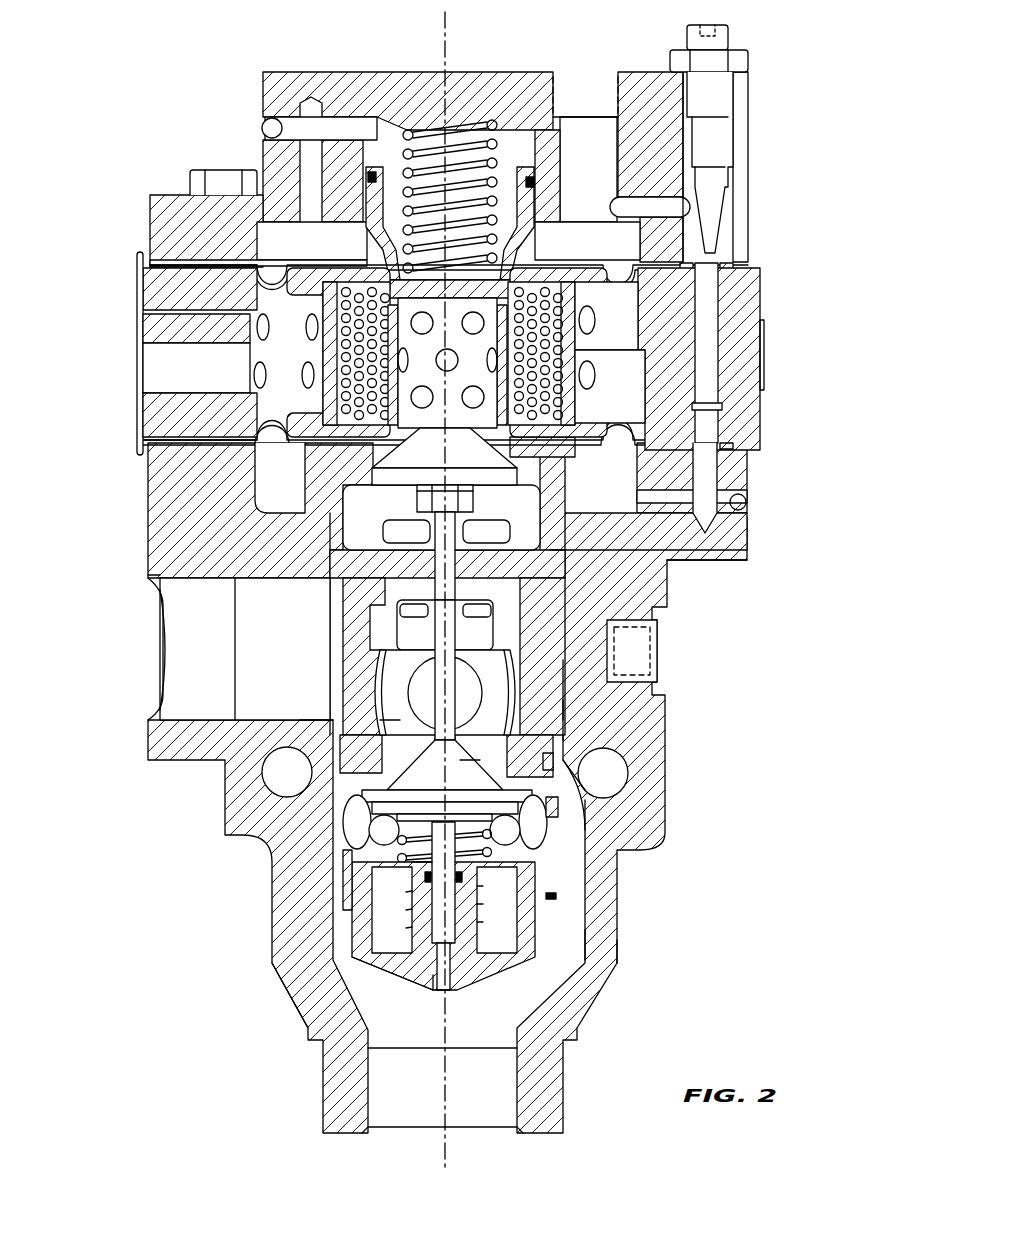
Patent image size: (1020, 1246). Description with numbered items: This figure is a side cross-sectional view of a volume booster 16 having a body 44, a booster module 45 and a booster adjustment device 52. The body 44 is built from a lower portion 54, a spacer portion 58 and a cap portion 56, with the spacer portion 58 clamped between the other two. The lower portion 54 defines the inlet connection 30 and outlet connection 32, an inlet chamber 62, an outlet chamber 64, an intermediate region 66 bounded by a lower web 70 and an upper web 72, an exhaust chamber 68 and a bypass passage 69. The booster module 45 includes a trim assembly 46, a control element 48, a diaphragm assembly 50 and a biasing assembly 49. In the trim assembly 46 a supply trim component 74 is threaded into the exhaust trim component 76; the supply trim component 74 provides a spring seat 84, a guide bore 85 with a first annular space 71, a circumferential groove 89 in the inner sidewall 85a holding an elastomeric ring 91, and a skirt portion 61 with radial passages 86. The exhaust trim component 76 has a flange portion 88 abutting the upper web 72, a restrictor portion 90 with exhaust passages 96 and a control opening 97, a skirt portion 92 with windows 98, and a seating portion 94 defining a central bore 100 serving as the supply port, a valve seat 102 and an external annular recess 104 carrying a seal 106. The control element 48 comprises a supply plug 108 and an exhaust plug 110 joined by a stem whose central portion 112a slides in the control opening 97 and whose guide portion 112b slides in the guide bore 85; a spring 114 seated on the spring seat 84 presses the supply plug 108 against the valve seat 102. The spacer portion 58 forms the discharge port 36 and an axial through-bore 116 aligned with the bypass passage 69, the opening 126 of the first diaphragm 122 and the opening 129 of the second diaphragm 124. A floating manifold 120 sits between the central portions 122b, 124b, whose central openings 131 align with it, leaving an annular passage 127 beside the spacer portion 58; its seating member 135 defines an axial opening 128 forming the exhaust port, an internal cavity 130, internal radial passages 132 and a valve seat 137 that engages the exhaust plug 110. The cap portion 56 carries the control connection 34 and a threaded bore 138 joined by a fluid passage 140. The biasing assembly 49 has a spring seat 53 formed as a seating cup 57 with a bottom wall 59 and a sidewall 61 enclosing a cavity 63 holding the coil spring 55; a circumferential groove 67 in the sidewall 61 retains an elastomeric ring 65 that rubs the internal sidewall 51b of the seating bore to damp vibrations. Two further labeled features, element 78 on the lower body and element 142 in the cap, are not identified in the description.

The volume booster 16 is at (165, 99).
The inlet connection 30 is at (485, 1120).
The outlet connection 32 is at (175, 713).
The control connection 34 is at (595, 95).
The discharge port 36 is at (157, 380).
The body 44 is at (183, 505).
The booster module 45 is at (660, 507).
The trim assembly 46 is at (660, 603).
The control element 48 is at (562, 702).
The biasing assembly 49 is at (388, 181).
The diaphragm assembly 50 is at (268, 266).
The internal sidewall 51b is at (527, 130).
The booster adjustment device 52 is at (742, 46).
The spring seat 53 is at (447, 363).
The lower portion 54 is at (650, 725).
The spring 55 is at (462, 140).
The cap portion 56 is at (163, 205).
The seating cup 57 is at (365, 245).
The spacer portion 58 is at (160, 292).
The bottom wall 59 is at (418, 278).
The sidewall 61 is at (527, 180).
The inlet chamber 62 is at (572, 950).
The cavity 63 is at (486, 267).
The outlet chamber 64 is at (321, 671).
The elastomeric ring 65 is at (365, 182).
The intermediate region 66 is at (330, 720).
The circumferential groove 67 is at (545, 190).
The exhaust chamber 68 is at (291, 493).
The bypass passage 69 is at (695, 532).
The lower web 70 is at (560, 790).
The first annular space 71 is at (455, 932).
The upper web 72 is at (330, 525).
The supply trim component 74 is at (406, 984).
The exhaust trim component 76 is at (337, 491).
The wall 78 is at (295, 990).
The spring seat 84 is at (520, 960).
The guide bore 85 is at (447, 982).
The inner sidewall 85a is at (423, 1005).
The passages 86 is at (540, 815).
The flange portion 88 is at (560, 522).
The circumferential groove 89 is at (423, 875).
The restrictor portion 90 is at (349, 579).
The elastomeric ring 91 is at (465, 882).
The skirt portion 92 is at (356, 588).
The seating portion 94 is at (528, 745).
The exhaust passages 96 is at (480, 640).
The control opening 97 is at (440, 533).
The windows 98 is at (487, 657).
The central bore 100 is at (565, 805).
The valve seat 102 is at (542, 800).
The external annular recess 104 is at (555, 762).
The seal 106 is at (475, 760).
The supply plug 108 is at (483, 779).
The exhaust plug 110 is at (483, 456).
The central portion 112a is at (400, 725).
The guide portion 112b is at (420, 866).
The spring 114 is at (560, 935).
The axial through-bore 116 is at (712, 386).
The floating manifold 120 is at (680, 317).
The first diaphragm 122 is at (150, 270).
The central portion 122b is at (706, 272).
The second diaphragm 124 is at (150, 440).
The central portion 124b is at (660, 452).
The opening 126 is at (745, 285).
The annular passage 127 is at (712, 330).
The axial opening 128 is at (235, 352).
The opening 129 is at (745, 445).
The internal cavity 130 is at (587, 363).
The central openings 131 is at (660, 470).
The internal radial passages 132 is at (535, 265).
The seating member 135 is at (560, 520).
The valve seat 137 is at (570, 480).
The threaded bore 138 is at (738, 95).
The fluid passage 140 is at (682, 205).
The chamber 142 is at (595, 239).